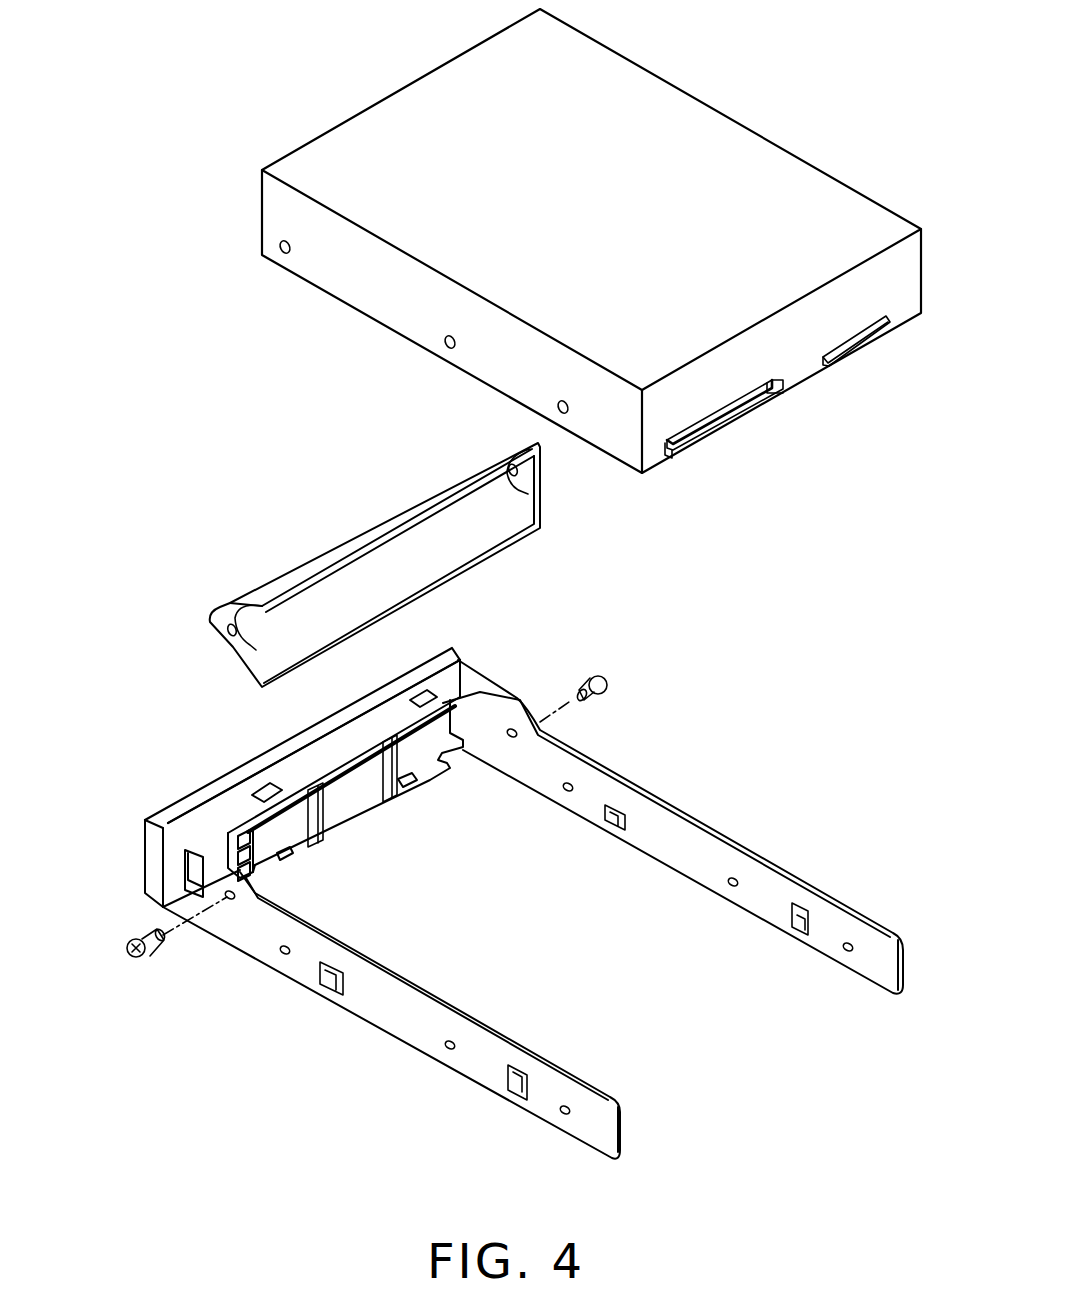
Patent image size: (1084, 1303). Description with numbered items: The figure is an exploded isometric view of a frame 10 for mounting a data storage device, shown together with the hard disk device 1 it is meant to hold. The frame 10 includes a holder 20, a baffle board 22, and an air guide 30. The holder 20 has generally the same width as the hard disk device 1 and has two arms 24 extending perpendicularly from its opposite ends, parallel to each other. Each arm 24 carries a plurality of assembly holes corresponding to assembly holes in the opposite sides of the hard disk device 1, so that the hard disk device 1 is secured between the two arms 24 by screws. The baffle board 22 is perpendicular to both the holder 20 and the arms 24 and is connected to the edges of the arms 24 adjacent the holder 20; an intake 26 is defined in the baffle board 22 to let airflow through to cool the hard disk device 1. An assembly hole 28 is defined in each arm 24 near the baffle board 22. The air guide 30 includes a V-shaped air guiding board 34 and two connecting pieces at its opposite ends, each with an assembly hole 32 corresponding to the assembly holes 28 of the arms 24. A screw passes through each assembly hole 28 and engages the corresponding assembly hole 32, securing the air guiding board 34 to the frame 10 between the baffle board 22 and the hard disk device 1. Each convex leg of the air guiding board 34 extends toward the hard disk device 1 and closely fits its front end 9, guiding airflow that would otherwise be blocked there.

The hard disk device 1 is at (591, 241).
The front end 9 is at (368, 105).
The frame 10 is at (482, 878).
The holder 20 is at (218, 815).
The baffle board 22 is at (280, 750).
The arms 24 is at (698, 860).
The intake 26 is at (357, 772).
The assembly hole 28 is at (512, 738).
The air guide 30 is at (363, 565).
The assembly hole 32 is at (230, 623).
The air guiding board 34 is at (358, 537).